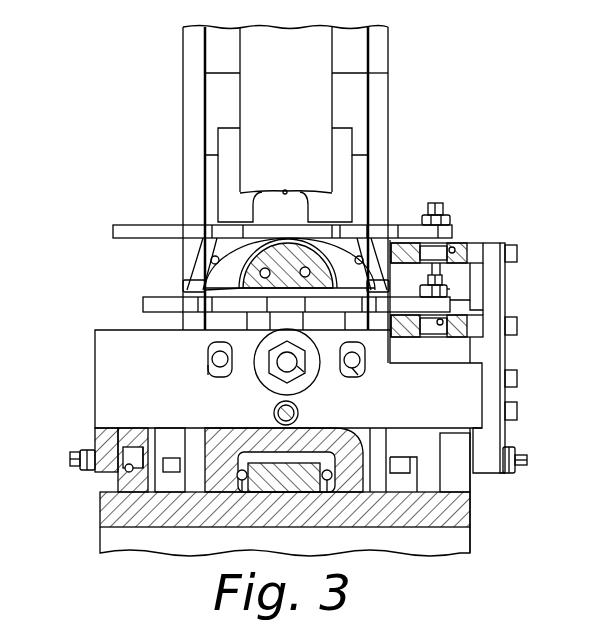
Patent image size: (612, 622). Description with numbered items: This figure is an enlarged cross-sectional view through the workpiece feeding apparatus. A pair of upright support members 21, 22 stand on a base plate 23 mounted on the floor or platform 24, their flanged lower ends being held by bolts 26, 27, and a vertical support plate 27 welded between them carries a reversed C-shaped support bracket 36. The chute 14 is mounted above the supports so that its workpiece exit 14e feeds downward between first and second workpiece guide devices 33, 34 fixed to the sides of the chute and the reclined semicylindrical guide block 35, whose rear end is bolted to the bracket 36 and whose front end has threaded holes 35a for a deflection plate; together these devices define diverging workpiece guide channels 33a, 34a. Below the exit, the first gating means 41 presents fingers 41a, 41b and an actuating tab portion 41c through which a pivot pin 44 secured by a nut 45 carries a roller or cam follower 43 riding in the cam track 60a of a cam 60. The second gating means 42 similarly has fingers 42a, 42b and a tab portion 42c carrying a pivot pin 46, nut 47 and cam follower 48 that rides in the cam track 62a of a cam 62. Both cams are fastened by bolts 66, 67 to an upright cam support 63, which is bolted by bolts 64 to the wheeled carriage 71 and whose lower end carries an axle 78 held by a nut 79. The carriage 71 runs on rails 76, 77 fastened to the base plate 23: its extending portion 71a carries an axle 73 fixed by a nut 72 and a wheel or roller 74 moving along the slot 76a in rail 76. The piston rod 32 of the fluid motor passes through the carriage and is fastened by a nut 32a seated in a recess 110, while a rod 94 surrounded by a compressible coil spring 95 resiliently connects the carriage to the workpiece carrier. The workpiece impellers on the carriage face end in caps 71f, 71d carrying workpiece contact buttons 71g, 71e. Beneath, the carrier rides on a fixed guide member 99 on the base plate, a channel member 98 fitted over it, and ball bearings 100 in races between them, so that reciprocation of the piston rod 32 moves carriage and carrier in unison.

The chute 14 is at (299, 100).
The workpiece exit 14e is at (285, 190).
The upright support member 21 is at (183, 66).
The upright support member 22 is at (388, 66).
The base plate 23 is at (100, 506).
The floor or platform 24 is at (108, 538).
The bolt 26 is at (170, 460).
The vertical support plate 27 is at (360, 93).
The piston rod 32 is at (287, 364).
The nut 32a is at (300, 372).
The first workpiece guide device 33 is at (227, 140).
The workpiece guide channel 33a is at (211, 260).
The second workpiece guide device 34 is at (343, 145).
The workpiece guide channel 34a is at (350, 258).
The longitudinal workpiece guide device 35 is at (282, 240).
The hole 35a is at (250, 270).
The support bracket 36 is at (280, 324).
The first gating means 41 is at (105, 231).
The first finger 41a is at (345, 228).
The second finger 41b is at (140, 225).
The actuating tab portion 41c is at (454, 236).
The second gating means 42 is at (135, 305).
The first finger 42a is at (311, 304).
The second finger 42b is at (140, 297).
The actuating tab portion 42c is at (476, 309).
The roller or cam follower 43 is at (440, 260).
The pivot pin 44 is at (446, 208).
The nut 45 is at (451, 220).
The pivot pin 46 is at (426, 282).
The nut 47 is at (450, 289).
The roller or cam follower 48 is at (440, 338).
The cam 60 is at (505, 268).
The cam track 60a is at (505, 250).
The cam 62 is at (477, 337).
The cam track 62a is at (505, 340).
The upright cam support 63 is at (495, 437).
The bolt 64 is at (517, 392).
The bolt 66 is at (517, 255).
The bolt 67 is at (517, 327).
The wheeled carriage 71 is at (137, 401).
The extending portion 71a is at (97, 436).
The cap 71d is at (213, 374).
The workpiece contact button 71e is at (207, 358).
The cap 71f is at (360, 376).
The workpiece contact button 71g is at (361, 360).
The nut 72 is at (84, 449).
The axle 73 is at (70, 458).
The wheel or roller 74 is at (125, 468).
The rail 76 is at (141, 483).
The slot 76a is at (130, 472).
The rail 77 is at (471, 486).
The axle 78 is at (528, 461).
The nut 79 is at (507, 474).
The rod 94 is at (299, 413).
The compressible coil spring 95 is at (273, 413).
The channel member 98 is at (328, 481).
The fixed guide member 99 is at (284, 492).
The ball bearings 100 is at (327, 481).
The recess 110 is at (262, 372).